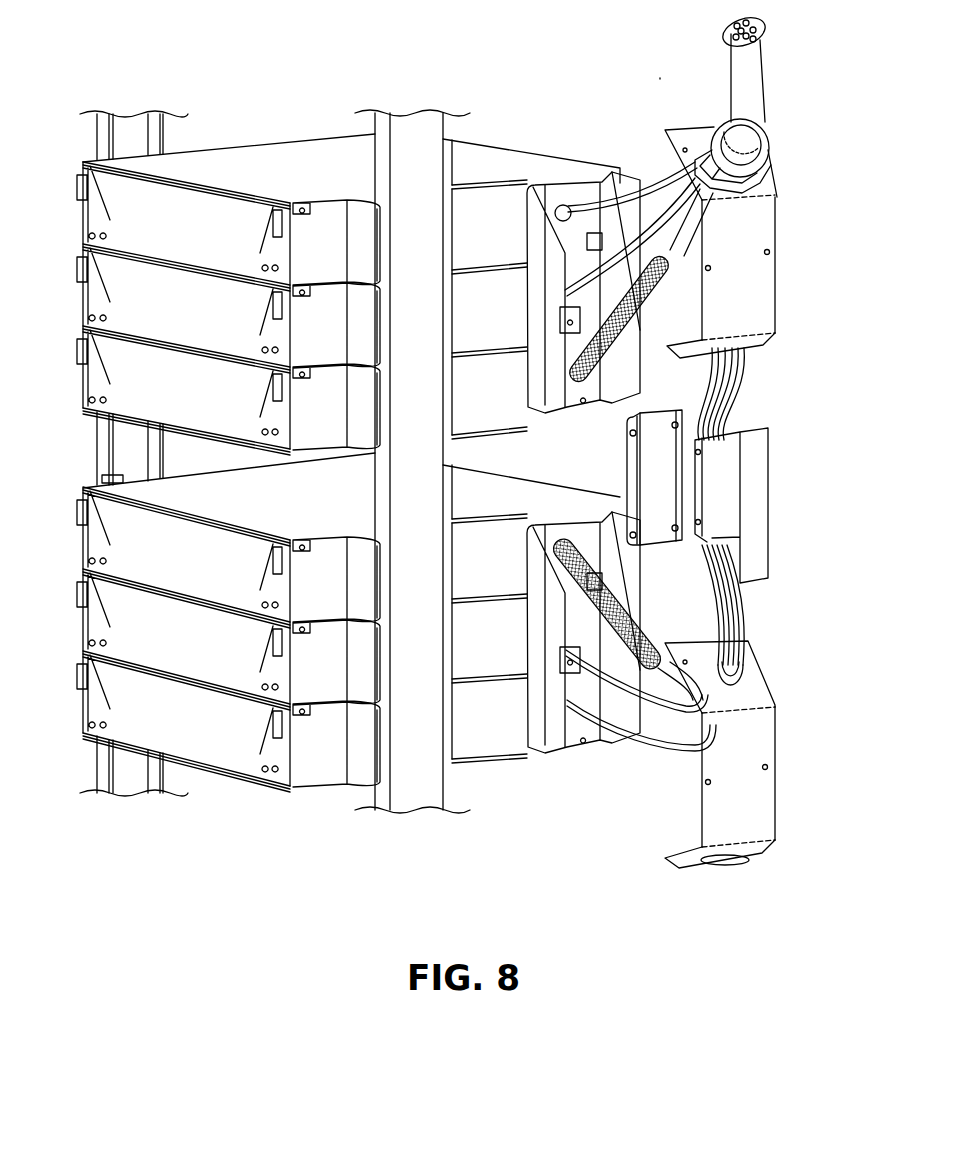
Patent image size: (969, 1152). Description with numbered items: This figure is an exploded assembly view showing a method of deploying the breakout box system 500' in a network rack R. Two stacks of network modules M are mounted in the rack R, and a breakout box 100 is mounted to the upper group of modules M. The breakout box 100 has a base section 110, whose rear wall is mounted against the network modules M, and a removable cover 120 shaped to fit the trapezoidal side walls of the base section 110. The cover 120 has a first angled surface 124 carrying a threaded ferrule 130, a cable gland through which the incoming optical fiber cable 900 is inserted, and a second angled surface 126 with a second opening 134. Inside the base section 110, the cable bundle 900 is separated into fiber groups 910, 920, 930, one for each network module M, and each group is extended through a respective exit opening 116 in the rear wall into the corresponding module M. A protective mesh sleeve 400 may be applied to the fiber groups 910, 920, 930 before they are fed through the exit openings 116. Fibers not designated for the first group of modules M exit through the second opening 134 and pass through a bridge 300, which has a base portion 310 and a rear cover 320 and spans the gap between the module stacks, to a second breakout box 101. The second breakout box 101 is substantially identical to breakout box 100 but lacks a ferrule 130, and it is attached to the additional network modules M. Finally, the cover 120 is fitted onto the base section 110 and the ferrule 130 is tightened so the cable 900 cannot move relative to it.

The breakout box system 500' is at (651, 41).
The optical fiber cable 900 is at (750, 70).
The fiber group 930 is at (645, 182).
The exit opening 116 is at (566, 202).
The fiber group 910 is at (668, 233).
The fiber group 920 is at (592, 277).
The threaded ferrule 130 is at (768, 150).
The first angled surface 124 is at (768, 183).
The removable cover 120 is at (775, 222).
The breakout box 100 is at (800, 287).
The second angled surface 126 is at (770, 342).
The second opening 134 is at (747, 349).
The base section 110 is at (550, 517).
The rear cover 320 is at (627, 448).
The base portion 310 is at (767, 455).
The bridge 300 is at (788, 526).
The protective mesh sleeve 400 is at (633, 640).
The second breakout box 101 is at (790, 797).
The network module M is at (120, 527).
The network rack R is at (408, 147).